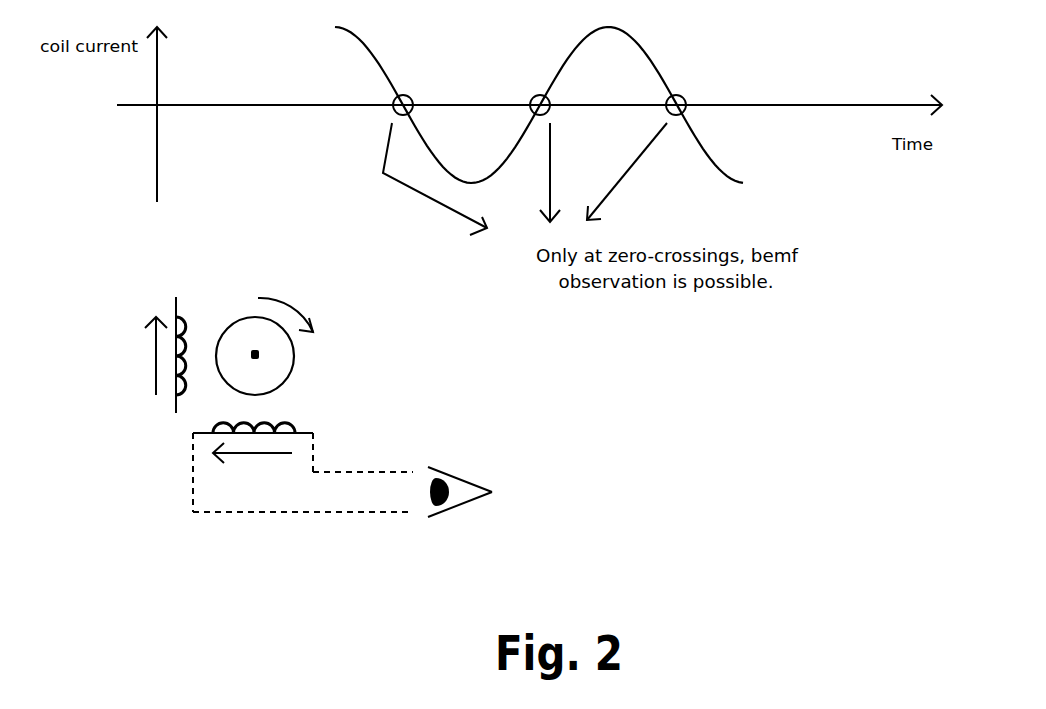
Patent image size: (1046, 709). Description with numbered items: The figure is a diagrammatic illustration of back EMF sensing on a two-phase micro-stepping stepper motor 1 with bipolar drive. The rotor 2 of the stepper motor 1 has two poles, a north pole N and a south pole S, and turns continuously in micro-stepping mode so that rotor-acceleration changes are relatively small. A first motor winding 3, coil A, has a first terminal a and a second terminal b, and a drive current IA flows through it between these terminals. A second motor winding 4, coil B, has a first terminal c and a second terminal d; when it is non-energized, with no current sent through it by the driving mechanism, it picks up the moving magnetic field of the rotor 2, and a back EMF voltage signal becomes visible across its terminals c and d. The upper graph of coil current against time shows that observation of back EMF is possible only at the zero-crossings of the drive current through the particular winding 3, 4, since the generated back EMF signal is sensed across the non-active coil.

The stepper motor 1 is at (412, 373).
The rotor 2 is at (239, 344).
The first motor winding 3 is at (180, 375).
The second motor winding 4 is at (270, 425).